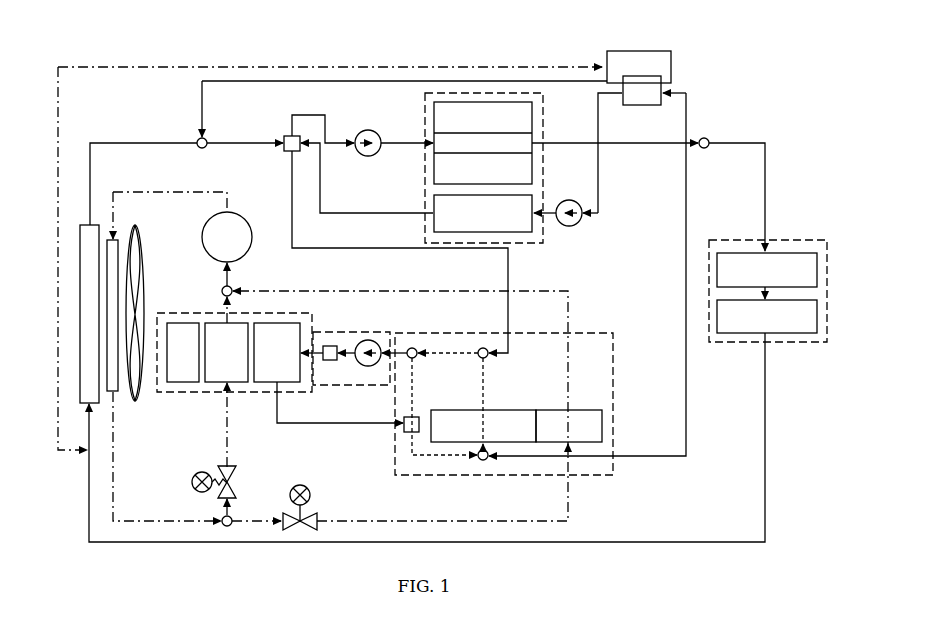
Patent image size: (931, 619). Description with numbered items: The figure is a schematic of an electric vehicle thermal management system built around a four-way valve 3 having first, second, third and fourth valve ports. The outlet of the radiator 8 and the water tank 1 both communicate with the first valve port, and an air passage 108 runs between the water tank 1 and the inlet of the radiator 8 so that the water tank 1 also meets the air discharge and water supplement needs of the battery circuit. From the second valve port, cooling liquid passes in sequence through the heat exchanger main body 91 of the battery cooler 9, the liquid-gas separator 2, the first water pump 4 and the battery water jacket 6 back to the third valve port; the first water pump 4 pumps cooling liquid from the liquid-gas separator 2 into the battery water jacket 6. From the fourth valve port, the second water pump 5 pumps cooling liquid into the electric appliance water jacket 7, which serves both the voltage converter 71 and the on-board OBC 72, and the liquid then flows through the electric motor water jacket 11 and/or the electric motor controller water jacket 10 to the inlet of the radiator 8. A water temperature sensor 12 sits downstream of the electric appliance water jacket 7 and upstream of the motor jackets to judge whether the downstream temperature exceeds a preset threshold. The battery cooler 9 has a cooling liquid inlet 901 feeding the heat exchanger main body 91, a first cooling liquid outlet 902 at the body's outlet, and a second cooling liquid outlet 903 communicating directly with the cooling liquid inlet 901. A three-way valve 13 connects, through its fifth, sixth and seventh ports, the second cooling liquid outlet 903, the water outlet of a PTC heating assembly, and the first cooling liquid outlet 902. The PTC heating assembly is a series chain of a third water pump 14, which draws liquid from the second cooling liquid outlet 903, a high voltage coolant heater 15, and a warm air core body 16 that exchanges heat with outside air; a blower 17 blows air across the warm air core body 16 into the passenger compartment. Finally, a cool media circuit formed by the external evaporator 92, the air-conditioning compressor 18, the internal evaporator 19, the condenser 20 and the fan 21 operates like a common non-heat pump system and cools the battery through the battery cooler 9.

The air passage 108 is at (155, 65).
The water tank 1 is at (640, 52).
The liquid-gas separator 2 is at (650, 96).
The four-way valve 3 is at (283, 137).
The first water pump 4 is at (575, 220).
The second water pump 5 is at (370, 130).
The battery water jacket 6 is at (505, 235).
The electric appliance water jacket 7 is at (492, 143).
The voltage converter (DCDC) 71 is at (484, 100).
The on-board OBC 72 is at (534, 171).
The radiator 8 is at (80, 285).
The battery cooler 9 is at (588, 332).
The electric motor controller water jacket 10 is at (785, 252).
The electric motor water jacket 11 is at (785, 334).
The water temperature sensor 12 is at (710, 138).
The three-way valve 13 is at (418, 417).
The third water pump 14 is at (368, 341).
The high voltage coolant heater 15 is at (335, 347).
The warm air core body 16 is at (265, 383).
The blower 17 is at (183, 323).
The air-conditioning compressor 18 is at (237, 212).
The internal evaporator 19 is at (215, 383).
The condenser 20 is at (112, 382).
The fan 21 is at (143, 257).
The heat exchanger main body 91 is at (465, 432).
The external evaporator 92 is at (577, 430).
The cooling liquid inlet 901 is at (480, 348).
The first cooling liquid outlet 902 is at (487, 460).
The second cooling liquid outlet 903 is at (413, 348).